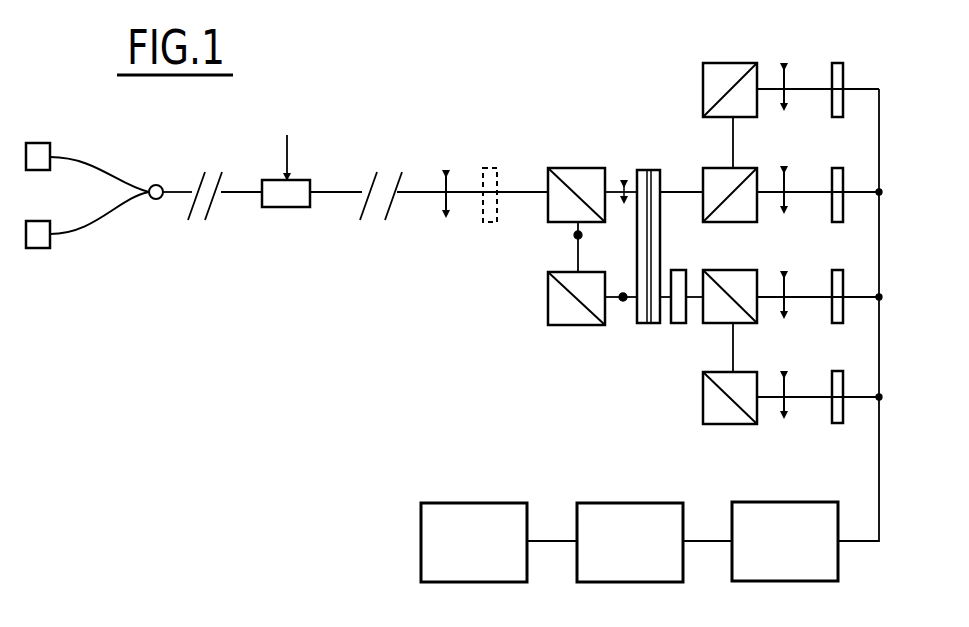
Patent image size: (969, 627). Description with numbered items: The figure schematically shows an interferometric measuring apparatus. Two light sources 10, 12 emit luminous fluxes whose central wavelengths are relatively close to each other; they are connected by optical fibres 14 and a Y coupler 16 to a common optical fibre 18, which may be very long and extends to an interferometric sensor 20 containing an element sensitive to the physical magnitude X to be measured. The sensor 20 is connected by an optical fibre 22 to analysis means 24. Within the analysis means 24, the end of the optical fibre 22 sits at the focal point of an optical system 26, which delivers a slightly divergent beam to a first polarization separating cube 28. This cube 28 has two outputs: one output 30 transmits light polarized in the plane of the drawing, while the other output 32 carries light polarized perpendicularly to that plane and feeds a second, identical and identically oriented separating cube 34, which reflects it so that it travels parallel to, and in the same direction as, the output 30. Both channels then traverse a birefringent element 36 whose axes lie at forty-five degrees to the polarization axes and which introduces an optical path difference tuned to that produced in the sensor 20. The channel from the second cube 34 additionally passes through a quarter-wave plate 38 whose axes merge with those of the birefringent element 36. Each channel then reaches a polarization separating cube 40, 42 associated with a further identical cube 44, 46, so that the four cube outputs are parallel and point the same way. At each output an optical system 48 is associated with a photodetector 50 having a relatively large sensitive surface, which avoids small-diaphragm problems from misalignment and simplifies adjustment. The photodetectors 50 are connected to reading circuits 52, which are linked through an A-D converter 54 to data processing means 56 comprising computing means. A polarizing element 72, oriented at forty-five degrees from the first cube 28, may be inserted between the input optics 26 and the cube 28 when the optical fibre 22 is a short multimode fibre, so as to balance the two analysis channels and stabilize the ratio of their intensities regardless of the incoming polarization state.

The light source 10 is at (50, 145).
The light source 12 is at (34, 248).
The optical fibres 14 is at (113, 180).
The Y coupler 16 is at (162, 187).
The common optical fibre 18 is at (224, 153).
The sensor 20 is at (287, 207).
The optical fibre 22 is at (330, 190).
The analysis means 24 is at (618, 118).
The optical system 26 is at (448, 172).
The first polarization separating cube 28 is at (572, 167).
The output 30 is at (625, 180).
The output 32 is at (577, 254).
The polarization separating cube 34 is at (586, 326).
The birefringent element 36 is at (650, 162).
The quarter-wave plate 38 is at (698, 255).
The polarization separating cube 40 is at (720, 167).
The polarization separating cube 42 is at (752, 253).
The polarization separating cube 44 is at (727, 62).
The polarization separating cube 46 is at (703, 385).
The optical system 48 is at (784, 62).
The photodetector 50 is at (838, 62).
The reading circuits 52 is at (802, 554).
The A-D converter 54 is at (647, 554).
The data processing means 56 is at (488, 554).
The polarizing element 72 is at (497, 217).